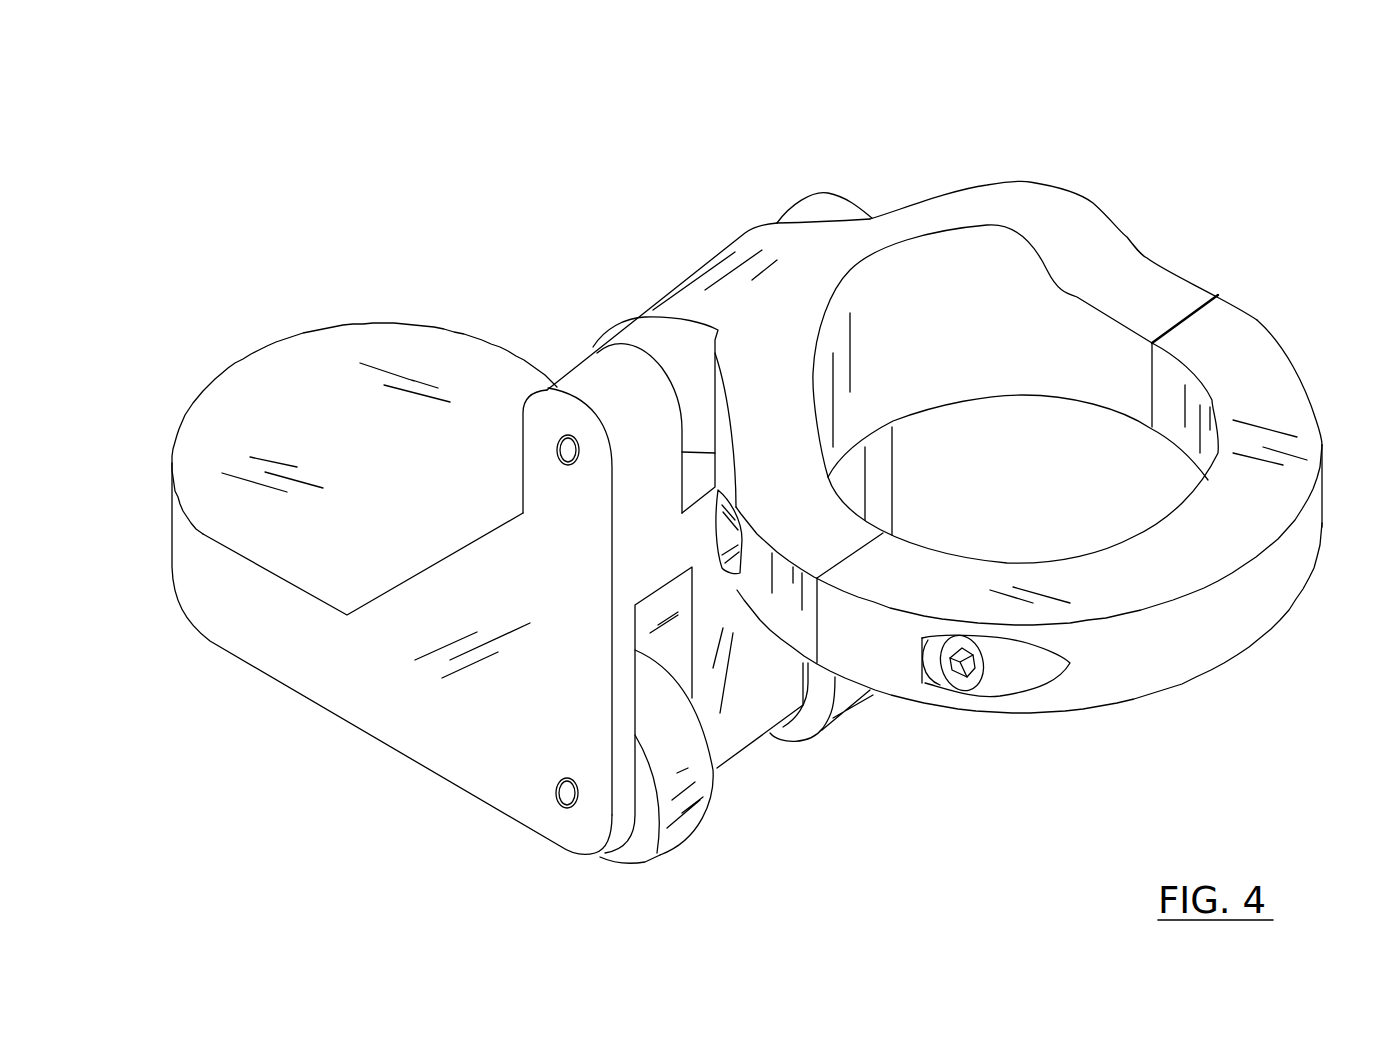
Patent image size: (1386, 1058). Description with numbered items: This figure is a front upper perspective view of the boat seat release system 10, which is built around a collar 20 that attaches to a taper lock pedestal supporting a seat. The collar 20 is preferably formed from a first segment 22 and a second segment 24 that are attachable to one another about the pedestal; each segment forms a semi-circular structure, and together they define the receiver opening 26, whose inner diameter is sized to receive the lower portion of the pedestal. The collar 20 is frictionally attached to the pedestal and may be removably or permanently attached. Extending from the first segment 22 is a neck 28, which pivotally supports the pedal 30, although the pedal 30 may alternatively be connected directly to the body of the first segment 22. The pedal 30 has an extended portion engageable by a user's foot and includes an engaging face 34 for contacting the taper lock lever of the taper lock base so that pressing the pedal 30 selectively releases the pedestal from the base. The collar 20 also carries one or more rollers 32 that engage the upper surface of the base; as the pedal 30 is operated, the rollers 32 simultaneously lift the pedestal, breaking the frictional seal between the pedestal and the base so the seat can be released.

The boat seat release system 10 is at (1238, 116).
The collar 20 is at (1038, 183).
The first segment 22 is at (1113, 280).
The second segment 24 is at (1167, 665).
The receiver opening 26 is at (1212, 400).
The neck 28 is at (718, 270).
The pedal 30 is at (304, 372).
The rollers 32 is at (858, 700).
The engaging face 34 is at (738, 728).